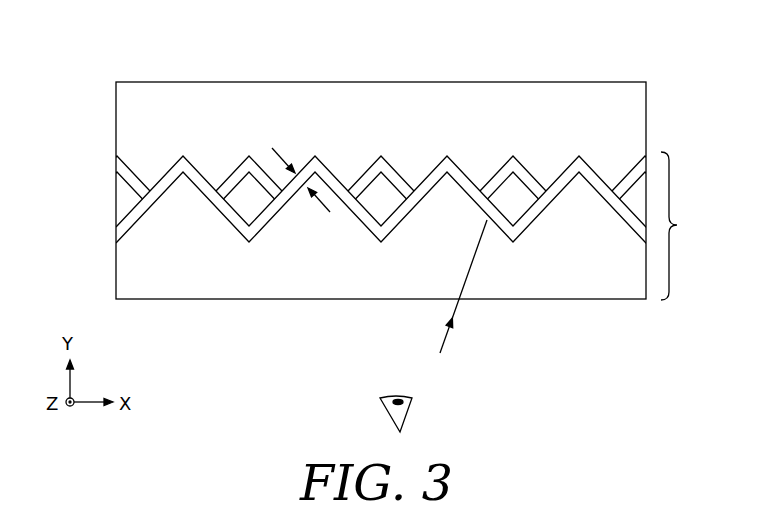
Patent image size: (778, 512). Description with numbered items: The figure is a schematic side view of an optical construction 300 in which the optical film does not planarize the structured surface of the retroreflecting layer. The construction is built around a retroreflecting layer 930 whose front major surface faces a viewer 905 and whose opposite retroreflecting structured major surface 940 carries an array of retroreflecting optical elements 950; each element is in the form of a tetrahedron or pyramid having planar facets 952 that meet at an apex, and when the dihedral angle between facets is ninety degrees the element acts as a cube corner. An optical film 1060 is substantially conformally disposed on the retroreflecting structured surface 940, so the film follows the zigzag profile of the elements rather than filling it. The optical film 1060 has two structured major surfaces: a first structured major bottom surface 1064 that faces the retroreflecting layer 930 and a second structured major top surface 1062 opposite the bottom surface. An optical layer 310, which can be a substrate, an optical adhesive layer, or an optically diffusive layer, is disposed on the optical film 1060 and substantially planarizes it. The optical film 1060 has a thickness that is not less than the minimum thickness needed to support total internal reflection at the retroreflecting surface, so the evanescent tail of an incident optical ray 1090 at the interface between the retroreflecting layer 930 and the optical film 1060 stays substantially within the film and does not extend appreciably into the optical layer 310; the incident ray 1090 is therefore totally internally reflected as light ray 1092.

The optical construction 300 is at (162, 42).
The optical layer 310 is at (127, 120).
The second structured major top surface 1062 is at (168, 171).
The first structured major bottom surface 1064 is at (171, 190).
The retroreflecting structured major surface 940 is at (342, 227).
The optical film 1060 is at (532, 182).
The facets 952 is at (270, 228).
The retroreflecting optical elements 950 is at (377, 202).
The light ray 1092 is at (437, 200).
The incident optical ray 1090 is at (445, 338).
The retroreflecting layer 930 is at (690, 226).
The viewer 905 is at (392, 413).